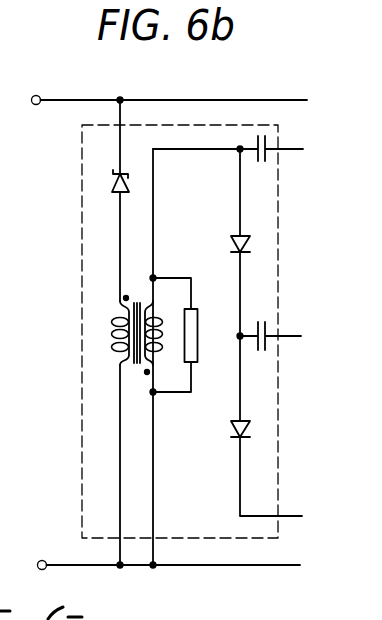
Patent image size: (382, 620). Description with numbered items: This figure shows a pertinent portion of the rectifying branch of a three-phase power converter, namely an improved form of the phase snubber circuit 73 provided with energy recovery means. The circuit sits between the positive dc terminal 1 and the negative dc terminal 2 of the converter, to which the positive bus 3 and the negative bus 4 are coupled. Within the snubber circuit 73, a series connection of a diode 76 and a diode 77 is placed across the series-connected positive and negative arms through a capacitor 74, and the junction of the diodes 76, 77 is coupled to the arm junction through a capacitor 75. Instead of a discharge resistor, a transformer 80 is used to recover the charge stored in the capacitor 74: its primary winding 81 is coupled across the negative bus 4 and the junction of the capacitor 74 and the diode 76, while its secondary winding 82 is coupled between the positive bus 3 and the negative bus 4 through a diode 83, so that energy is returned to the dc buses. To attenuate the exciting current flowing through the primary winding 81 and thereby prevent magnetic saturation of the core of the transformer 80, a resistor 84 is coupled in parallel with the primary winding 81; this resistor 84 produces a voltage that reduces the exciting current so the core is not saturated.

The positive dc terminal 1 is at (32, 97).
The negative dc terminal 2 is at (42, 560).
The positive bus 3 is at (168, 100).
The negative bus 4 is at (284, 563).
The snubber circuit 73 is at (280, 259).
The capacitor 74 is at (263, 162).
The capacitor 75 is at (265, 352).
The diode 76 is at (232, 245).
The diode 77 is at (232, 432).
The transformer 80 is at (119, 360).
The primary winding 81 is at (156, 352).
The secondary winding 82 is at (111, 335).
The diode 83 is at (116, 184).
The resistor 84 is at (198, 357).